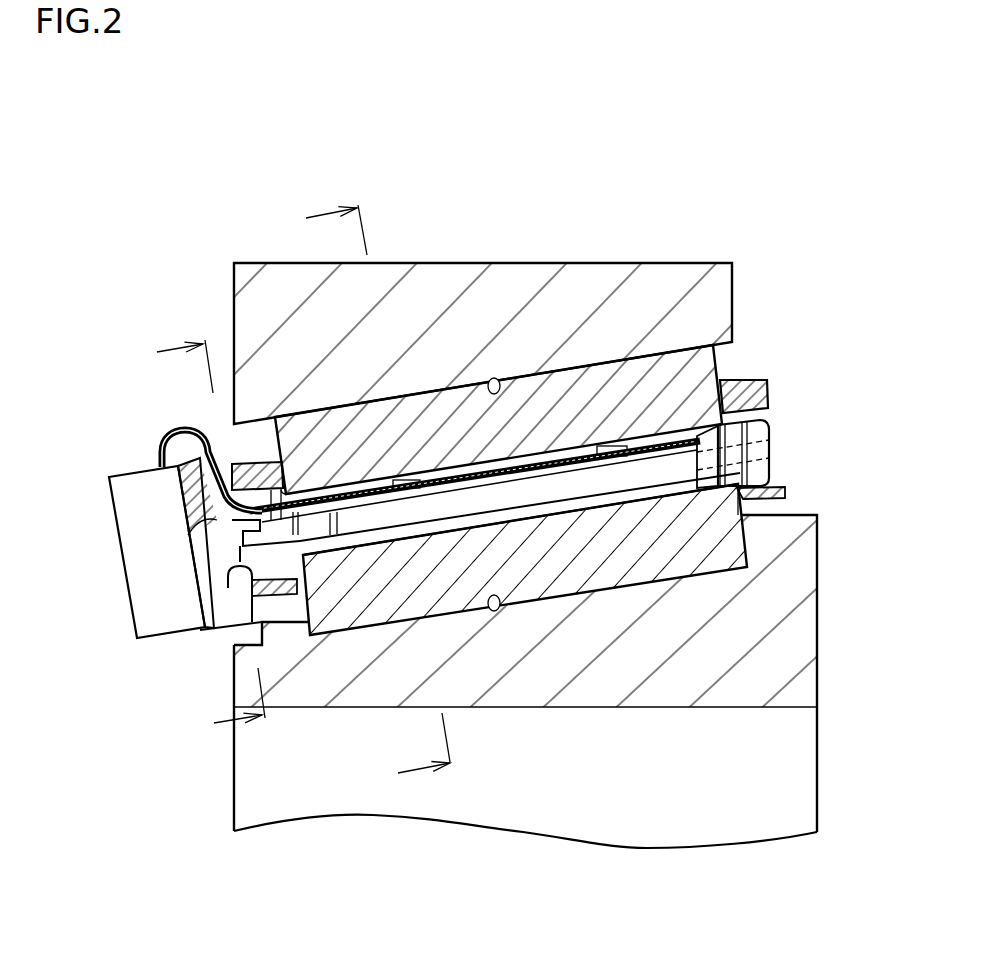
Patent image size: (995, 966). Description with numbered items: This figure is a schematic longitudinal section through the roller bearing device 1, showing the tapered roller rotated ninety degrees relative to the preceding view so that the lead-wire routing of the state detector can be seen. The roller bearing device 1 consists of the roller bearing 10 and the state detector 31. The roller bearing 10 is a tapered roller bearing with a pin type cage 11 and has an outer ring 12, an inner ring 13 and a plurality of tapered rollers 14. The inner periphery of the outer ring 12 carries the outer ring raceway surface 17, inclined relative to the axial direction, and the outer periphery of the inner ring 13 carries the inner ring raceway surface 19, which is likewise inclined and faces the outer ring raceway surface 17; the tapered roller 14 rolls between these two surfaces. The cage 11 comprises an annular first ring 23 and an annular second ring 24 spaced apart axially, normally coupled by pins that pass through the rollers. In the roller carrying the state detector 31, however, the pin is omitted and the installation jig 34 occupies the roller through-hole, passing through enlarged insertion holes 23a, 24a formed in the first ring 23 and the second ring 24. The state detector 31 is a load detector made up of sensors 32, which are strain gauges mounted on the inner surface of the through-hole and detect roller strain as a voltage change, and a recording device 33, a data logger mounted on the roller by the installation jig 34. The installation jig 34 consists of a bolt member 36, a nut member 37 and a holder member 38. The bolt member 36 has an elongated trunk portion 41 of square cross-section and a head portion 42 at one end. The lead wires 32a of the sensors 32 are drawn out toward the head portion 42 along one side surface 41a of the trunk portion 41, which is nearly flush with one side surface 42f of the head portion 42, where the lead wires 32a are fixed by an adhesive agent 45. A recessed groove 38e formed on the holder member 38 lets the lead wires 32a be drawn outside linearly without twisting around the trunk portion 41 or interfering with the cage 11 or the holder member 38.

The roller bearing device 1 is at (175, 157).
The roller bearing 10 is at (492, 295).
The pin type cage 11 is at (766, 346).
The outer ring 12 is at (449, 263).
The inner ring 13 is at (678, 664).
The tapered roller 14 is at (436, 412).
The outer ring raceway surface 17 is at (495, 379).
The inner ring raceway surface 19 is at (496, 611).
The first ring 23 is at (276, 546).
The insertion hole 23a is at (228, 588).
The second ring 24 is at (742, 379).
The insertion hole 24a is at (776, 488).
The state detector 31 is at (154, 582).
The sensor 32 is at (405, 485).
The lead wire 32a is at (353, 493).
The recording device 33 is at (109, 514).
The installation jig 34 is at (774, 428).
The bolt member 36 is at (371, 541).
The nut member 37 is at (740, 493).
The holder member 38 is at (210, 607).
The recessed groove 38e is at (207, 447).
The trunk portion 41 is at (668, 468).
The one side surface of trunk portion 41a is at (632, 438).
The head portion 42 is at (266, 546).
The one side surface of head portion 42f is at (313, 497).
The adhesive agent 45 is at (270, 496).